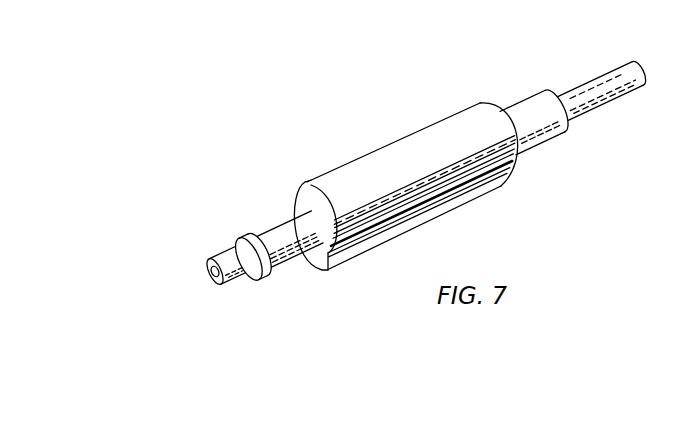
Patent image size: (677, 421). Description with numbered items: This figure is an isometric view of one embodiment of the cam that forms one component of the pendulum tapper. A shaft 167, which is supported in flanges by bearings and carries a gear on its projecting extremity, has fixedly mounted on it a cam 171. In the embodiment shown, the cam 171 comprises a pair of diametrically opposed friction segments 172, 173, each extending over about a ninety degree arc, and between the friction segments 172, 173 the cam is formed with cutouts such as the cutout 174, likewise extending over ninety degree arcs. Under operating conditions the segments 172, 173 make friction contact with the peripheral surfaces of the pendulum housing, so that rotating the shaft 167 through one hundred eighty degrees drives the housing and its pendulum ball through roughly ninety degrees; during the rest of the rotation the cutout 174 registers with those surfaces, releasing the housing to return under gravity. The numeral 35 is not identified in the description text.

The tube 35 is at (224, 258).
The shaft 167 is at (265, 223).
The cam 171 is at (345, 163).
The friction segment 172 is at (450, 140).
The friction segment 173 is at (445, 211).
The cutout 174 is at (357, 222).